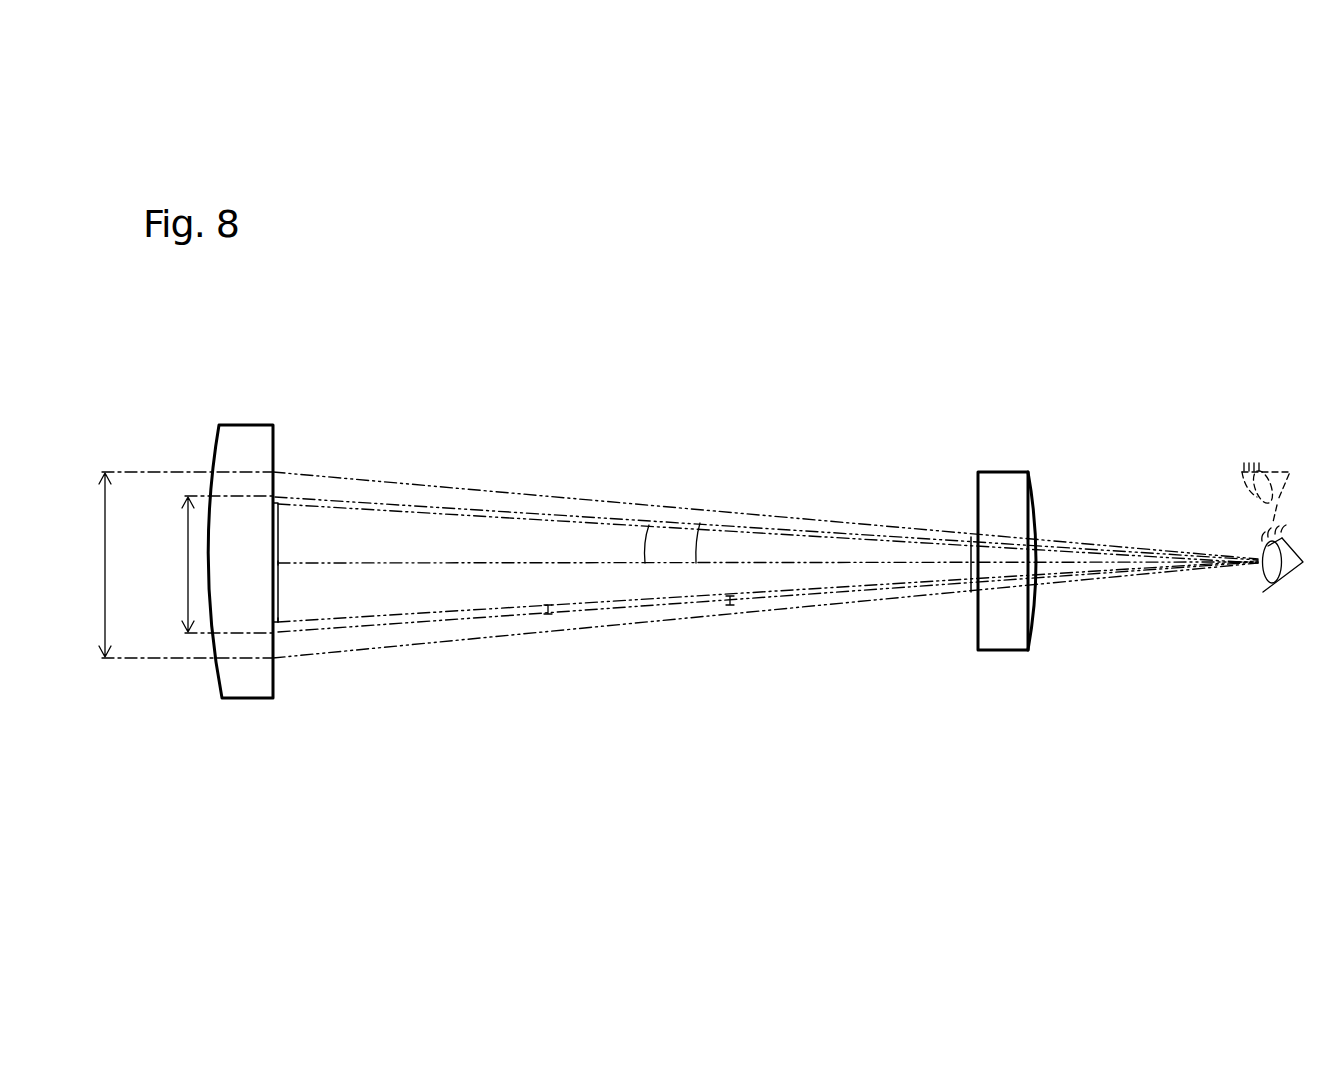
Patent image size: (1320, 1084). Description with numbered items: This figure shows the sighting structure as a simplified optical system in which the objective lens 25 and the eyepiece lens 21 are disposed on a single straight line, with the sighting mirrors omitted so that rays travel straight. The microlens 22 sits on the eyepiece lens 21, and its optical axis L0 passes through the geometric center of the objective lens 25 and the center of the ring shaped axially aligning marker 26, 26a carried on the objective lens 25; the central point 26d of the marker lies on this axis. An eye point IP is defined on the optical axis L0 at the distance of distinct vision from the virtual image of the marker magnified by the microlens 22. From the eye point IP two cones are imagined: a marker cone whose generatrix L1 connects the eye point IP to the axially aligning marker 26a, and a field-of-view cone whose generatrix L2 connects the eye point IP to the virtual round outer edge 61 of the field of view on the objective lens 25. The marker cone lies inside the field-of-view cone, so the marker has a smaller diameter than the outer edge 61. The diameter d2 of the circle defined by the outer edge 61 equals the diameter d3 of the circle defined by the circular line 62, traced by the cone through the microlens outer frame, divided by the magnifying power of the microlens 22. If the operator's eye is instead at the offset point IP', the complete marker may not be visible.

The objective lens 25 is at (245, 433).
The ring shaped axially aligning marker 26 is at (273, 500).
The axially aligning marker 26a is at (278, 620).
The display center 26d is at (300, 563).
The virtual round outer edge 61 is at (272, 495).
The circular line 62 is at (273, 473).
The eyepiece lens 21 is at (1002, 637).
The microlens 22 is at (971, 537).
The optical axis L0 is at (542, 563).
The generatrix of the marker conical surface L1 is at (549, 614).
The generatrix of the field-of-view conical surface L2 is at (730, 606).
The diameter of the virtual circular edge d2 is at (187, 520).
The diameter of the circle defined by the circular line 62 d3 is at (107, 577).
The eye point IP is at (1272, 627).
The another point IP' is at (1222, 466).